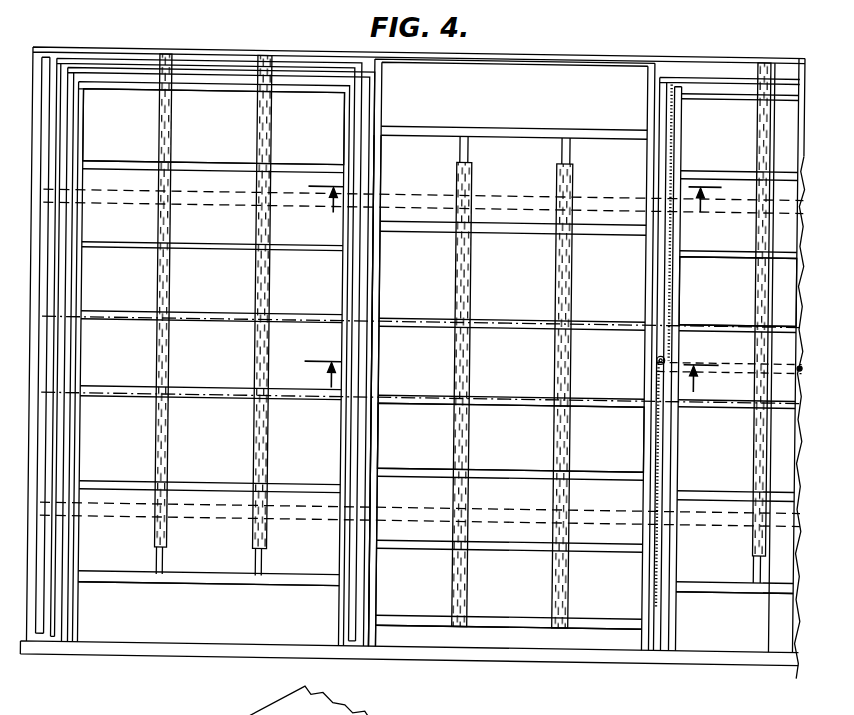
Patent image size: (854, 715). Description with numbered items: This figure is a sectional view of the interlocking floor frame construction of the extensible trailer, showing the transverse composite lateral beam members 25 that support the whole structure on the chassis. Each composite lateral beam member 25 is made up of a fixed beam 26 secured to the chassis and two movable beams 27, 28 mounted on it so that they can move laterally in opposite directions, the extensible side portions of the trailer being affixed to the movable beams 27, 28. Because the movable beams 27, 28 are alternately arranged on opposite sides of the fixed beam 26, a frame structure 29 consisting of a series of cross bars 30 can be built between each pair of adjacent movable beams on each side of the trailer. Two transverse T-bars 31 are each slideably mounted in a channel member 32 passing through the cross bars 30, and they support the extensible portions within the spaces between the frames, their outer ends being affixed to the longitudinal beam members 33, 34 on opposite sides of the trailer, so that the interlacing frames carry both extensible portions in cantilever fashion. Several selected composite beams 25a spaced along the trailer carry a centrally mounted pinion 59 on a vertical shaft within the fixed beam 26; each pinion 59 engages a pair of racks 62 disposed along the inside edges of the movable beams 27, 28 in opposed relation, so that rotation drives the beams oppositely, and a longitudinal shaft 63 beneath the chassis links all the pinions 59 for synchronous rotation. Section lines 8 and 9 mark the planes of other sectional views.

The section line 8- 8 is at (514, 205).
The section line 9- 9 is at (511, 379).
The composite lateral beam member 25 is at (388, 288).
The selected composite beam 25a is at (643, 274).
The fixed beam 26 is at (369, 365).
The movable beam 27 is at (356, 443).
The movable beam 28 is at (381, 433).
The frame structure 29 is at (131, 602).
The cross bar 30 is at (314, 104).
The transverse T-bar 31 is at (257, 272).
The channel member 32 is at (561, 138).
The longitudinal beam member 33 is at (202, 648).
The longitudinal beam member 34 is at (550, 50).
The pinion 59 is at (661, 369).
The rack 62 is at (672, 262).
The longitudinal shaft 63 is at (752, 356).